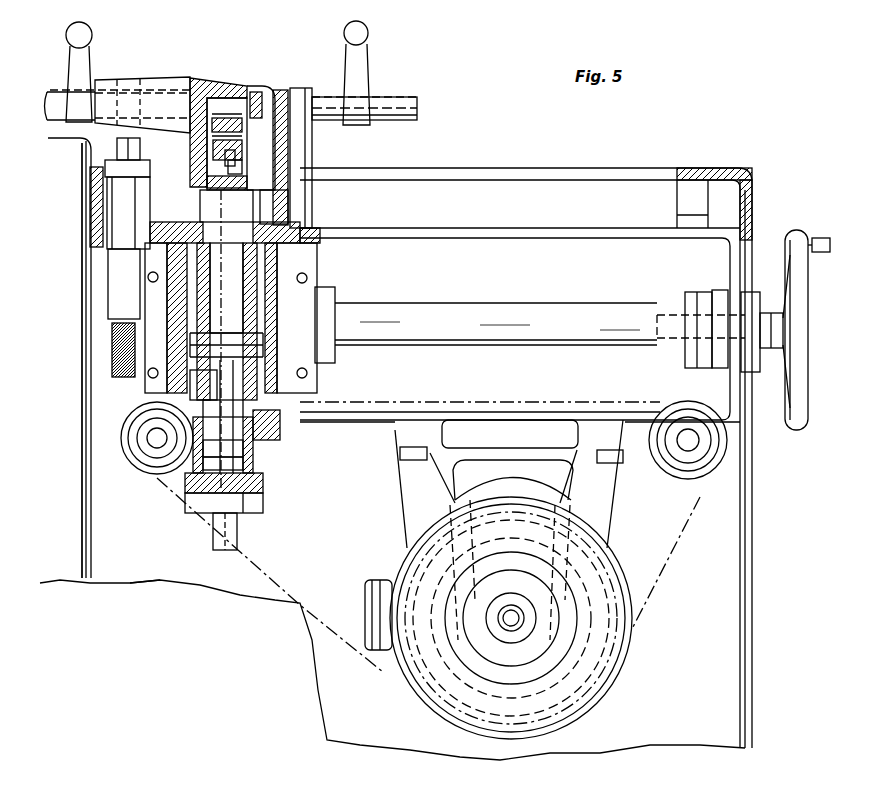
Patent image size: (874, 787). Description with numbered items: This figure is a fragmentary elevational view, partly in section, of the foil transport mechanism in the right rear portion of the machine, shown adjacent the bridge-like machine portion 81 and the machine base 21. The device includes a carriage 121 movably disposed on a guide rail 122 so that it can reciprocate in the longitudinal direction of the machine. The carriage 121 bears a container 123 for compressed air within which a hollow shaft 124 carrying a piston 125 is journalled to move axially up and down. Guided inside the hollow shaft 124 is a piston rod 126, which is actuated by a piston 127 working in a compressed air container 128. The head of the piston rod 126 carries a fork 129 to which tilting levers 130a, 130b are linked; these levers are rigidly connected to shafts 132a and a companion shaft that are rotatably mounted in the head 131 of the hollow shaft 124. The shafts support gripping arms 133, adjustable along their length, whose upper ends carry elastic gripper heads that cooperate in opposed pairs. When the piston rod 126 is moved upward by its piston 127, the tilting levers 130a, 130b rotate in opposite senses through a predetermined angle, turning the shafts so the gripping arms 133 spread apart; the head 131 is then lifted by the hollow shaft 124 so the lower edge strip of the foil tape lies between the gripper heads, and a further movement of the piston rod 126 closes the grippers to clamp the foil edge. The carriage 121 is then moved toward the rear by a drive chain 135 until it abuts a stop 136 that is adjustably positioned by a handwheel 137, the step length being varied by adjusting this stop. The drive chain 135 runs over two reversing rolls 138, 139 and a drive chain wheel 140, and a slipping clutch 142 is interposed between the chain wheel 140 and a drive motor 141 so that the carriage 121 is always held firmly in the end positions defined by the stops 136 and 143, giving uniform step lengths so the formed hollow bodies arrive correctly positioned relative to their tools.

The machine base 21 is at (157, 567).
The bridge-like machine portion 81 is at (67, 573).
The carriage 121 is at (335, 355).
The guide rail 122 is at (427, 312).
The container for compressed air 123 is at (316, 227).
The hollow shaft 124 is at (193, 223).
The piston 125 is at (260, 333).
The piston rod 126 is at (243, 160).
The piston 127 is at (250, 462).
The compressed air container 128 is at (248, 443).
The fork 129 is at (247, 153).
The lever 130a is at (213, 150).
The lever 130b is at (220, 130).
The head 131 is at (178, 82).
The shaft 132a is at (397, 100).
The gripping arm 133 is at (84, 58).
The drive chain 135 is at (277, 583).
The stop 136 is at (697, 300).
The handwheel 137 is at (797, 427).
The reversing roll 138 is at (142, 472).
The reversing roll 139 is at (712, 465).
The drive chain wheel 140 is at (600, 704).
The drive motor 141 is at (410, 497).
The slipping clutch 142 is at (555, 650).
The stop 143 is at (100, 332).